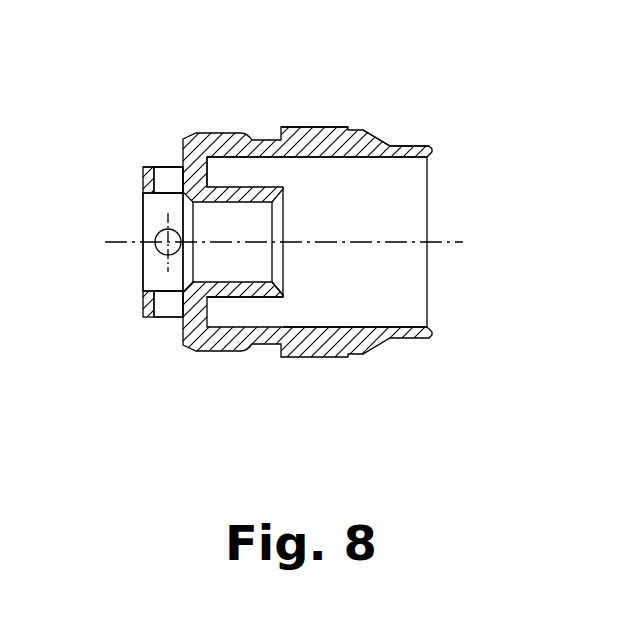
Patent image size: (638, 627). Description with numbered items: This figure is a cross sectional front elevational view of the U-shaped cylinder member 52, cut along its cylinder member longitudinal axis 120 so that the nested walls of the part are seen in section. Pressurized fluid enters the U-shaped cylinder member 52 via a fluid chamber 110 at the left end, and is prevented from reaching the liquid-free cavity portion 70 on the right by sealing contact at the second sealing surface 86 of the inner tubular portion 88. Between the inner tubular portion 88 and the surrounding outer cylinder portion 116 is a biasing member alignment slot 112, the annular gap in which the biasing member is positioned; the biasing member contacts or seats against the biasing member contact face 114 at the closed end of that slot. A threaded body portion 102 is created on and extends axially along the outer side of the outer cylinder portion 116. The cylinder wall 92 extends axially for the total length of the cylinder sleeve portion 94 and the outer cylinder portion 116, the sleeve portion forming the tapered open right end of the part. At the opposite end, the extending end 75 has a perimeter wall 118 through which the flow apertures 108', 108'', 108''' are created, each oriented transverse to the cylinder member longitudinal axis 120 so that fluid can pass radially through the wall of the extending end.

The U-shaped cylinder member 52 is at (392, 97).
The liquid-free cavity portion 70 is at (395, 310).
The extending end 75 is at (143, 167).
The second sealing surface 86 is at (260, 274).
The inner tubular portion 88 is at (248, 287).
The cylinder wall 92 is at (407, 158).
The cylinder sleeve portion 94 is at (405, 146).
The threaded body portion 102 is at (219, 351).
The flow aperture 108' is at (156, 359).
The flow aperture 108'' is at (118, 262).
The flow aperture 108''' is at (126, 148).
The fluid chamber 110 is at (157, 215).
The biasing member alignment slot 112 is at (247, 167).
The biasing member contact face 114 is at (209, 169).
The outer cylinder portion 116 is at (270, 145).
The perimeter wall 118 is at (142, 302).
The cylinder member longitudinal axis 120 is at (443, 245).